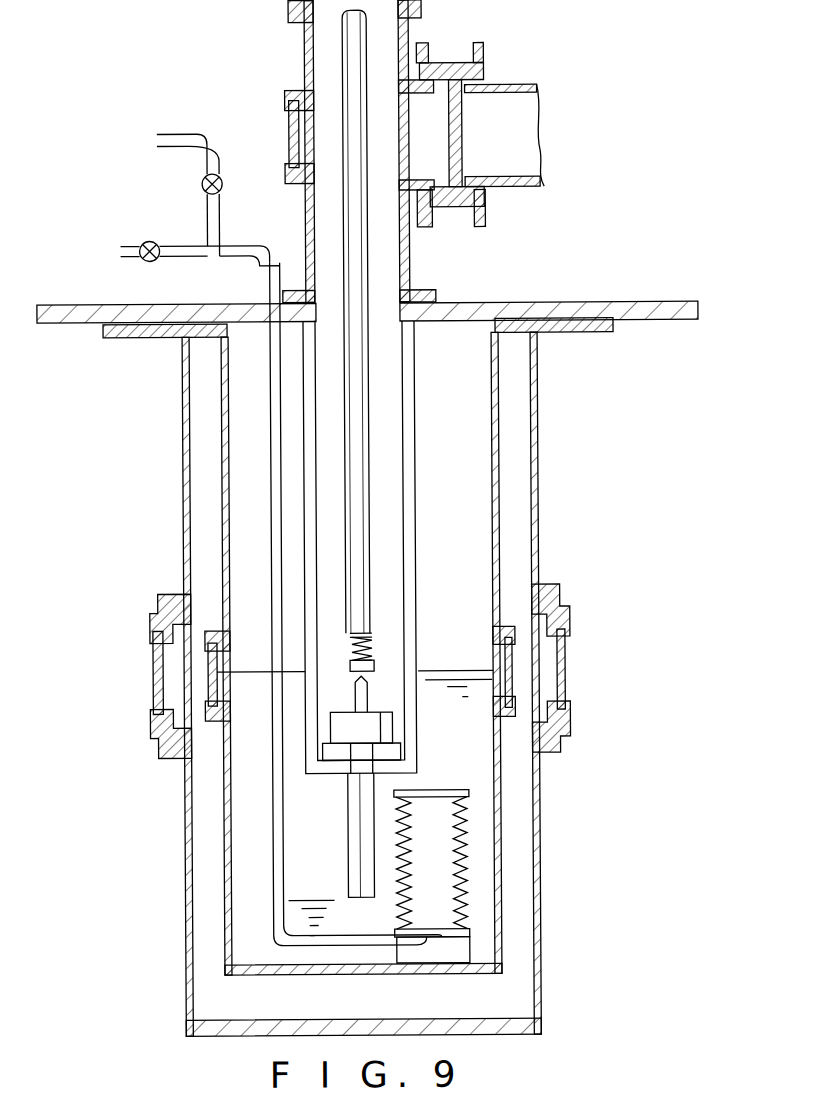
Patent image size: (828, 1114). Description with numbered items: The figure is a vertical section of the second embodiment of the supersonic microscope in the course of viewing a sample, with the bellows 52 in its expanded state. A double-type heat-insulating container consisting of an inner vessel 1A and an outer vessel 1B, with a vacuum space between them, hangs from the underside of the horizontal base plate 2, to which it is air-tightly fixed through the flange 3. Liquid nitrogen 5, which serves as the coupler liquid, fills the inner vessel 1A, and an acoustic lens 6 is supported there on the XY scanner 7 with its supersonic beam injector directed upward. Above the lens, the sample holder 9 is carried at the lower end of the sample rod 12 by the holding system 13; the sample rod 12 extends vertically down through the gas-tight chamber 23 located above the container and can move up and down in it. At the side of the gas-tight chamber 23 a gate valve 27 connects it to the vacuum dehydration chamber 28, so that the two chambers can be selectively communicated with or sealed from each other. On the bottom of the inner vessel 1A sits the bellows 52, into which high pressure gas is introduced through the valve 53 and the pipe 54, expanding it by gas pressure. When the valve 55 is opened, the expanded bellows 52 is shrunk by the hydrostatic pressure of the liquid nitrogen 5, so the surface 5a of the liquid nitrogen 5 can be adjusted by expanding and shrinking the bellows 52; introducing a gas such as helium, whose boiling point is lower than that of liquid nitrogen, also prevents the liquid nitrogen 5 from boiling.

The inner vessel 1A is at (498, 420).
The outer vessel 1B is at (540, 465).
The base plate 2 is at (600, 302).
The flange 3 is at (600, 334).
The liquid nitrogen 5 is at (476, 770).
The surface of liquid nitrogen 5a is at (468, 667).
The acoustic lens 6 is at (367, 693).
The XY scanner 7 is at (380, 727).
The sample holder 9 is at (374, 663).
The sample rod 12 is at (371, 456).
The system for holding sample holder 13 is at (372, 652).
The gas-tight chamber 23 is at (390, 268).
The gate valve 27 is at (458, 62).
The vacuum dehydration chamber 28 is at (512, 95).
The bellows 52 is at (465, 843).
The valve 53 is at (225, 178).
The pipe 54 is at (272, 855).
The valve 55 is at (152, 240).